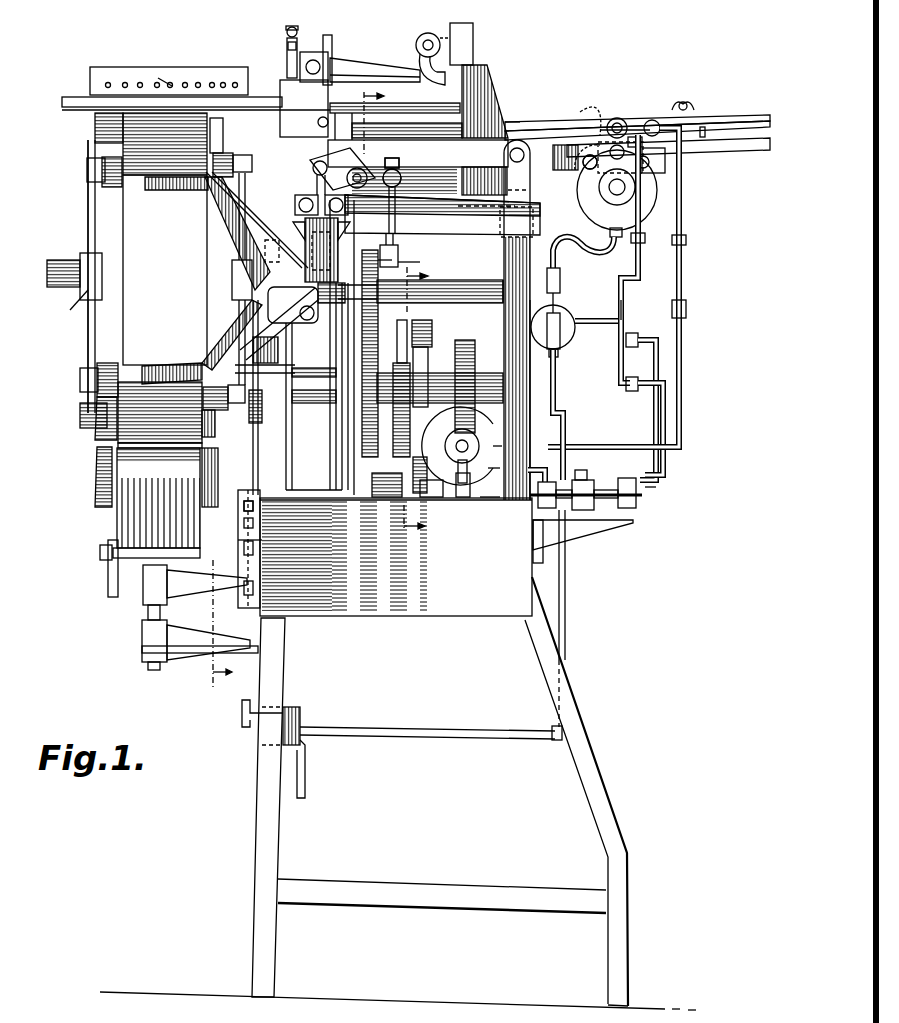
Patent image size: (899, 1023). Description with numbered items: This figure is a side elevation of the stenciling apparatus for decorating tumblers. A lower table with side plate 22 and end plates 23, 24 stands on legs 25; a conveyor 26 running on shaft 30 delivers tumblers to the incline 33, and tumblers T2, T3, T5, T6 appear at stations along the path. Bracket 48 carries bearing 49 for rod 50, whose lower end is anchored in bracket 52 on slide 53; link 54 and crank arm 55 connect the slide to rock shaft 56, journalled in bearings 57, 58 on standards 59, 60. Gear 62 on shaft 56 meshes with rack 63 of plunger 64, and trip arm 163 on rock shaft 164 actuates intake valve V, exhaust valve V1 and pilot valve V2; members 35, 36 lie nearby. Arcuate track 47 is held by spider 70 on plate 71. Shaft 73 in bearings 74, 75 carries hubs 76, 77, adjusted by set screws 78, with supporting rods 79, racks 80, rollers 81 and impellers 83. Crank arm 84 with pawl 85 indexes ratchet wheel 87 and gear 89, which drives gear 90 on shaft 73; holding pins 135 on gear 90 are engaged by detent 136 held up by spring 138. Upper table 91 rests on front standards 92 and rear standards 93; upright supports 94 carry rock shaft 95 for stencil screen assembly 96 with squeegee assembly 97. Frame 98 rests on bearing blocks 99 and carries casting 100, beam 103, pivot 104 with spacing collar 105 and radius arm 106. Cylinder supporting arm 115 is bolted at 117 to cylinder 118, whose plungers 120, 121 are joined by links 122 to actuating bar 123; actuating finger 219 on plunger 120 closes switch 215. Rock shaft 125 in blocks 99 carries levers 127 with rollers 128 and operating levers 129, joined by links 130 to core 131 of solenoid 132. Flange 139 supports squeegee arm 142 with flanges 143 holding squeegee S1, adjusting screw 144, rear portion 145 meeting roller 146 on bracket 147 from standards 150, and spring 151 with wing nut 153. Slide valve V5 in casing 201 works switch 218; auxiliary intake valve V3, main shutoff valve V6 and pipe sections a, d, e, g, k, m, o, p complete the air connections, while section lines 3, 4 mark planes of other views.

The side plate 22 is at (428, 605).
The end plate 23 is at (262, 582).
The end plate 24 is at (542, 564).
The supporting legs 25 is at (276, 862).
The endless conveyor 26 is at (108, 585).
The horizontal shaft 30 is at (100, 552).
The incline or runway 33 is at (253, 519).
The block 35 is at (410, 492).
The gear 36 is at (420, 493).
The circular arcuate track 47 is at (130, 228).
The bracket 48 is at (254, 543).
The bearing 49 is at (143, 585).
The rod 50 is at (148, 612).
The bracket 52 is at (142, 640).
The slide 53 is at (260, 649).
The link 54 is at (278, 364).
The crank arm 55 is at (278, 348).
The horizontal rock shaft 56 is at (486, 378).
The bearing 57 is at (336, 420).
The bearing 58 is at (462, 445).
The standard 59 is at (336, 442).
The standard 60 is at (340, 461).
The gear 62 is at (465, 343).
The toothed rack 63 is at (455, 437).
The plunger 64 is at (456, 446).
The spider 70 is at (180, 190).
The plate 71 is at (303, 245).
The horizontal shaft 73 is at (47, 268).
The bearing 74 is at (306, 308).
The bearing 75 is at (505, 272).
The front hub member 76 is at (70, 300).
The rear hub member 77 is at (232, 285).
The set screws 78 is at (82, 270).
The supporting rods 79 is at (88, 207).
The tumbler supporting rack 80 is at (87, 168).
The article supporting rollers 81 is at (102, 178).
The tumbler impeller 83 is at (95, 130).
The crank arm 84 is at (420, 362).
The pawl 85 is at (426, 330).
The ratchet wheel 87 is at (402, 418).
The gear 89 is at (387, 476).
The gear 90 is at (398, 250).
The upper table 91 is at (450, 200).
The front standards 92 is at (342, 429).
The rear standards 93 is at (530, 432).
The upright supports 94 is at (534, 190).
The transverse horizontal rock shaft 95 is at (520, 147).
The stencil screen assembly 96 is at (637, 110).
The squeegee assembly 97 is at (375, 59).
The frame 98 is at (418, 153).
The bearing blocks 99 is at (360, 150).
The casting 100 is at (304, 108).
The supporting beam 103 is at (573, 130).
The nut and bolt assembly 104 is at (690, 106).
The spacing collar 105 is at (700, 130).
The radius arm 106 is at (512, 118).
The cylinder supporting arm 115 is at (665, 168).
The bolts 117 is at (583, 170).
The stencil screen reciprocating cylinder 118 is at (657, 200).
The plunger 120 is at (640, 205).
The plunger 121 is at (626, 116).
The links 122 is at (617, 187).
The actuating bar 123 is at (622, 120).
The rock shaft 125 is at (360, 168).
The levers 127 is at (401, 180).
The rollers 128 is at (400, 170).
The operating lever 129 is at (300, 173).
The links 130 is at (300, 180).
The movable core 131 is at (295, 206).
The actuating solenoid 132 is at (292, 250).
The holding pins 135 is at (398, 262).
The bifurcated holding detent 136 is at (398, 258).
The coil spring 138 is at (396, 192).
The upstanding flange 139 is at (328, 40).
The squeegee carrying arm 142 is at (288, 68).
The parallel flanges 143 is at (90, 80).
The adjusting screw 144 is at (285, 50).
The rear portion of squeegee arm 145 is at (385, 72).
The roller 146 is at (426, 33).
The bracket 147 is at (440, 50).
The standards 150 is at (488, 70).
The coil spring 151 is at (288, 33).
The wing nut 153 is at (296, 42).
The trip arm 163 is at (462, 498).
The horizontal rock shaft 164 is at (487, 500).
The valve casing 201 is at (572, 314).
The switch 215 is at (590, 110).
The switch 218 is at (560, 347).
The actuating finger 219 is at (600, 140).
The section line 3 is at (291, 390).
The section line 4 is at (406, 396).
The squeegee S1 is at (152, 76).
The tumbler T2 is at (188, 492).
The tumbler T3 is at (97, 490).
The tumbler T5 is at (100, 415).
The tumbler T6 is at (222, 125).
The intake valve V is at (593, 508).
The exhaust valve V1 is at (538, 500).
The pilot valve V2 is at (630, 508).
The auxiliary intake valve V3 is at (654, 120).
The slide valve V5 is at (574, 318).
The main shutoff valve V6 is at (300, 712).
The pipe a is at (536, 469).
The pipe section d is at (462, 730).
The pipe section e is at (623, 309).
The pipe g is at (682, 400).
The pipe k is at (640, 437).
The pipe m is at (661, 487).
The pipe o is at (592, 250).
The pipe p is at (566, 417).